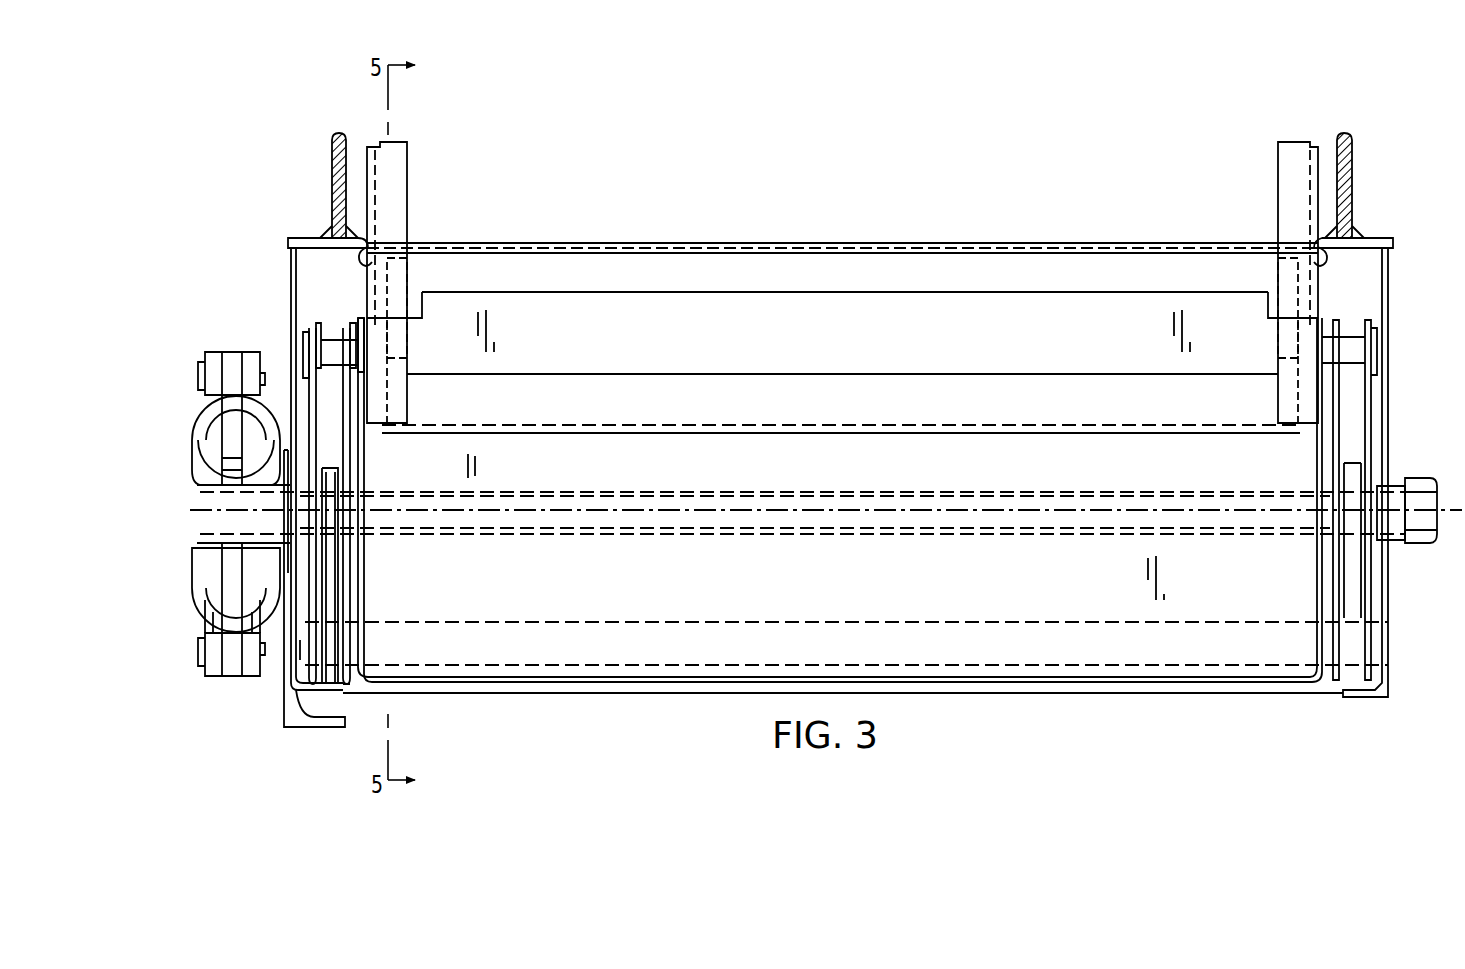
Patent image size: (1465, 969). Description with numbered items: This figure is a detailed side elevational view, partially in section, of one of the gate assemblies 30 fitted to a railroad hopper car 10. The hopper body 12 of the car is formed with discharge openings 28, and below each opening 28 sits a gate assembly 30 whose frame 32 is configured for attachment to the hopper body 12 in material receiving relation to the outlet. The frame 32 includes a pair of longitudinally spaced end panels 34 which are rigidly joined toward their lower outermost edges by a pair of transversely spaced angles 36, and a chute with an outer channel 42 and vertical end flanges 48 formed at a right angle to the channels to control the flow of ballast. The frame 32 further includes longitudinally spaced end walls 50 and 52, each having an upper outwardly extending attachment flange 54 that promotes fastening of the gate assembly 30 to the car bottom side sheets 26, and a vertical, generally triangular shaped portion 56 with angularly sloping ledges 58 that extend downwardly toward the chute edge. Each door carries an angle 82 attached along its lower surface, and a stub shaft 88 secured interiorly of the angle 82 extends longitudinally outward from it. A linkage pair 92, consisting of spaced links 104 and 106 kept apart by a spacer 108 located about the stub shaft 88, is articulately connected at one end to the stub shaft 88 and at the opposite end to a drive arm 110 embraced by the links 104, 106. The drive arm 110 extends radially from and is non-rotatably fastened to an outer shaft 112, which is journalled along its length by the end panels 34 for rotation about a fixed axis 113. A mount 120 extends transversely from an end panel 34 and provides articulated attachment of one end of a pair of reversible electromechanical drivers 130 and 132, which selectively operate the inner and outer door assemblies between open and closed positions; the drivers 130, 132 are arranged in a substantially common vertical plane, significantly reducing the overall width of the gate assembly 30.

The railroad hopper car 10 is at (1378, 126).
The hopper body 12 is at (331, 154).
The car bottom side sheet 26 is at (1354, 182).
The discharge opening 28 is at (655, 192).
The gate assembly 30 is at (1122, 160).
The frame 32 is at (286, 257).
The end panel 34 is at (290, 294).
The angle 36 is at (366, 690).
The outer channel 42 is at (958, 600).
The vertical end flange 48 is at (366, 590).
The end wall 50 is at (366, 152).
The end wall 52 is at (1318, 152).
The attachment flange 54 is at (312, 237).
The triangular shaped portion 56 is at (369, 245).
The sloping ledge 58 is at (409, 173).
The angle 82 is at (928, 287).
The stub shaft 88 is at (346, 352).
The linkage pair 92 is at (1334, 688).
The link 104 is at (350, 462).
The link 106 is at (315, 432).
The spacer 108 is at (326, 340).
The drive arm 110 is at (333, 557).
The outer shaft 112 is at (618, 522).
The fixed axis 113 is at (876, 512).
The mount 120 is at (298, 736).
The electromechanical driver 130 is at (185, 435).
The electromechanical driver 132 is at (186, 560).